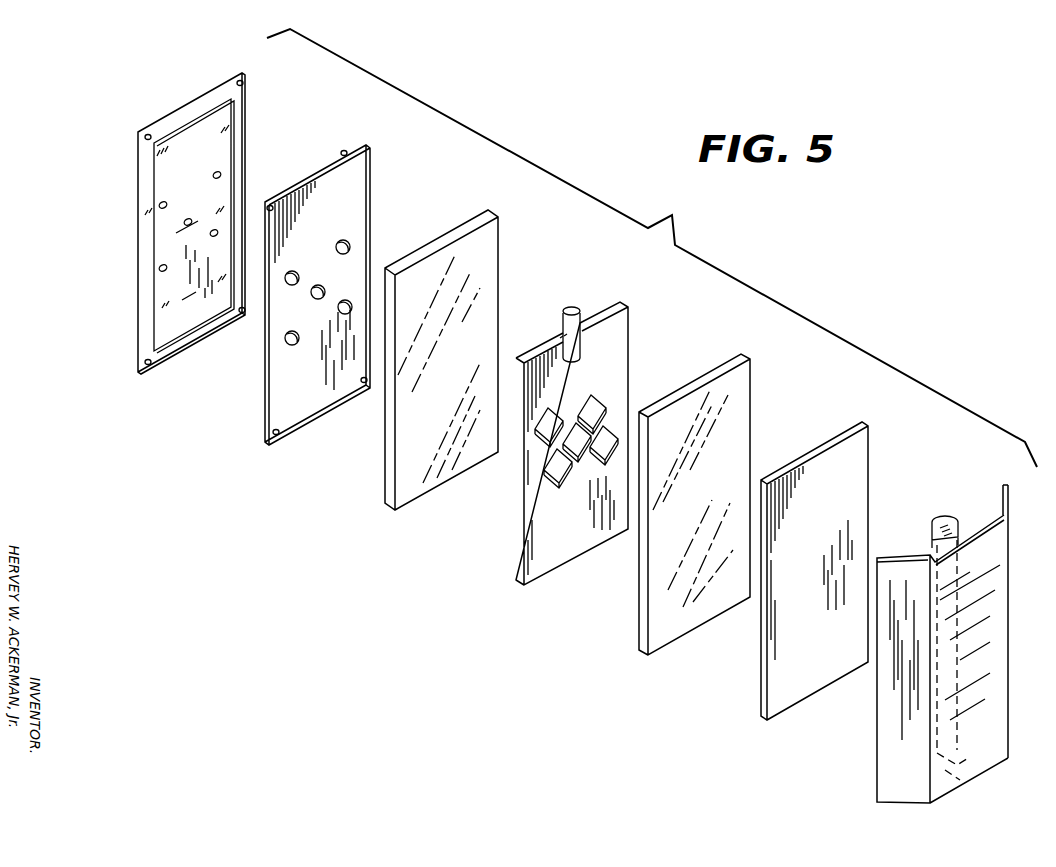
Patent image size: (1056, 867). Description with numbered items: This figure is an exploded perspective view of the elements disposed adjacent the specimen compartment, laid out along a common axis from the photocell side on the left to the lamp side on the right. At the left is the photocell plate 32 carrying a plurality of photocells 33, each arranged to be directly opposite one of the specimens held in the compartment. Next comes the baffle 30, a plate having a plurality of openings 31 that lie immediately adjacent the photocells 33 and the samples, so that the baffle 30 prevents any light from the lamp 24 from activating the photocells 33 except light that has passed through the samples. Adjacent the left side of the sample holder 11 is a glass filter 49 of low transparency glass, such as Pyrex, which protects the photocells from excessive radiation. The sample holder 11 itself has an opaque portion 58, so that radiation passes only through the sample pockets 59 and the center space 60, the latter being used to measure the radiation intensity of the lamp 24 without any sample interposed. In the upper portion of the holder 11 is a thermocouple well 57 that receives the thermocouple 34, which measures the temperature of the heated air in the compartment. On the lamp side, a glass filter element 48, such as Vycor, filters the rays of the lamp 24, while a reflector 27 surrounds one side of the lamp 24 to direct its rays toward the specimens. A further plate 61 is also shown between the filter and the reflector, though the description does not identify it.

The sample holder 11 is at (552, 438).
The lamp 24 is at (946, 520).
The reflector 27 is at (1002, 578).
The baffle 30 is at (362, 190).
The openings 31 is at (350, 247).
The photocell plate 32 is at (238, 105).
The photocells 33 is at (221, 173).
The thermocouple 34 is at (600, 292).
The glass filter element 48 is at (641, 632).
The glass filter 49 is at (487, 273).
The thermocouple well 57 is at (567, 337).
The opaque portion 58 is at (563, 543).
The sample pockets 59 is at (597, 405).
The center space 60 is at (577, 433).
The back plate 61 is at (862, 457).